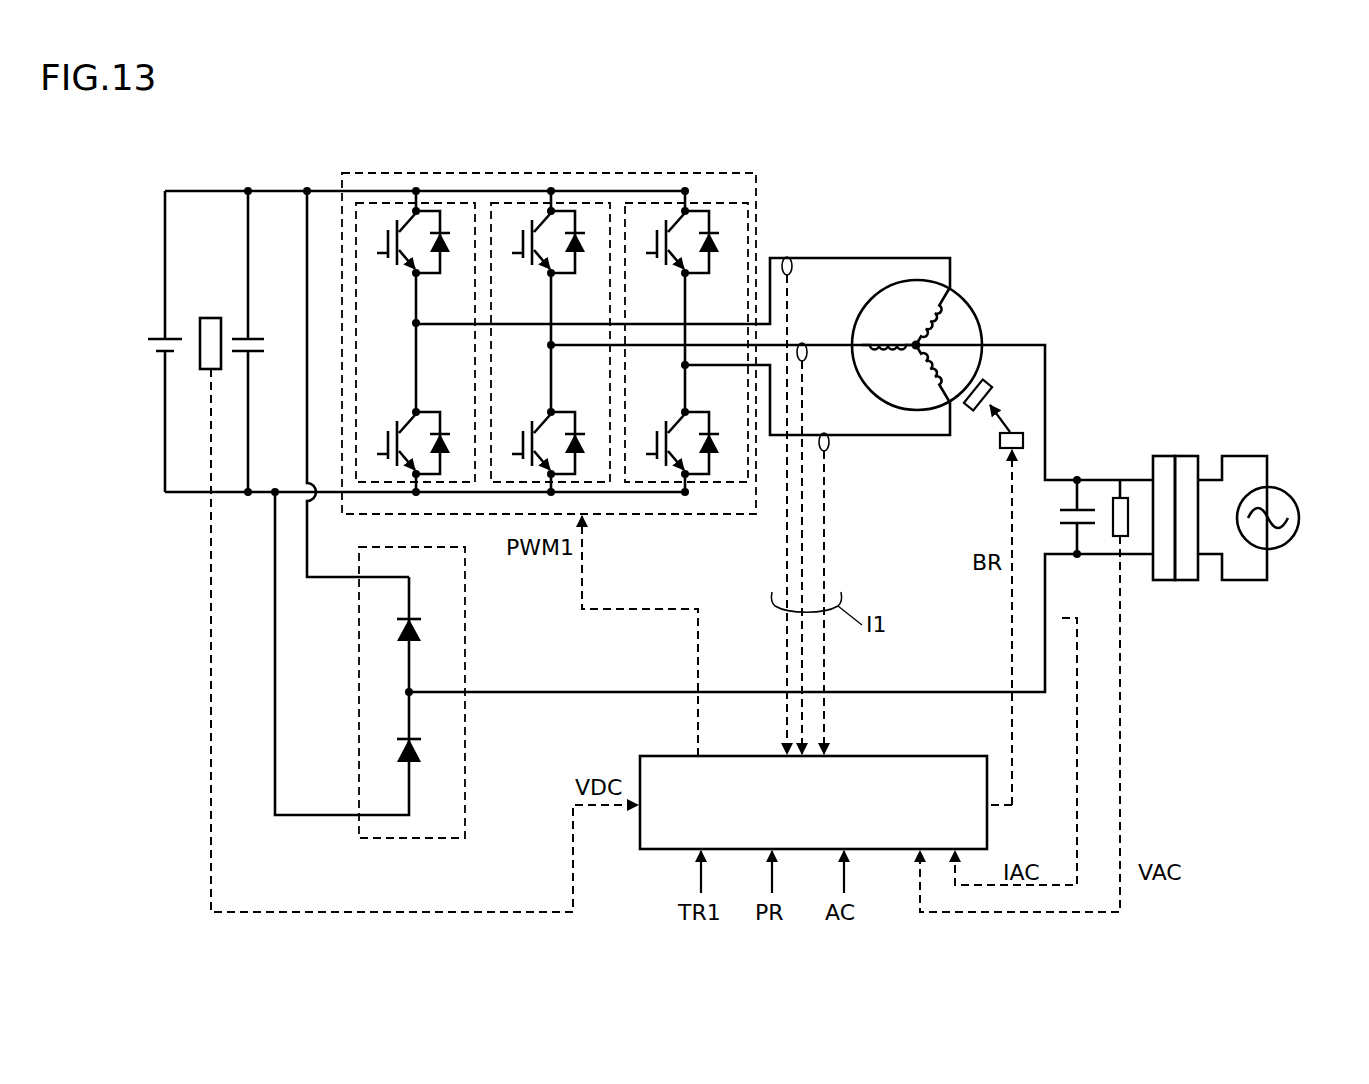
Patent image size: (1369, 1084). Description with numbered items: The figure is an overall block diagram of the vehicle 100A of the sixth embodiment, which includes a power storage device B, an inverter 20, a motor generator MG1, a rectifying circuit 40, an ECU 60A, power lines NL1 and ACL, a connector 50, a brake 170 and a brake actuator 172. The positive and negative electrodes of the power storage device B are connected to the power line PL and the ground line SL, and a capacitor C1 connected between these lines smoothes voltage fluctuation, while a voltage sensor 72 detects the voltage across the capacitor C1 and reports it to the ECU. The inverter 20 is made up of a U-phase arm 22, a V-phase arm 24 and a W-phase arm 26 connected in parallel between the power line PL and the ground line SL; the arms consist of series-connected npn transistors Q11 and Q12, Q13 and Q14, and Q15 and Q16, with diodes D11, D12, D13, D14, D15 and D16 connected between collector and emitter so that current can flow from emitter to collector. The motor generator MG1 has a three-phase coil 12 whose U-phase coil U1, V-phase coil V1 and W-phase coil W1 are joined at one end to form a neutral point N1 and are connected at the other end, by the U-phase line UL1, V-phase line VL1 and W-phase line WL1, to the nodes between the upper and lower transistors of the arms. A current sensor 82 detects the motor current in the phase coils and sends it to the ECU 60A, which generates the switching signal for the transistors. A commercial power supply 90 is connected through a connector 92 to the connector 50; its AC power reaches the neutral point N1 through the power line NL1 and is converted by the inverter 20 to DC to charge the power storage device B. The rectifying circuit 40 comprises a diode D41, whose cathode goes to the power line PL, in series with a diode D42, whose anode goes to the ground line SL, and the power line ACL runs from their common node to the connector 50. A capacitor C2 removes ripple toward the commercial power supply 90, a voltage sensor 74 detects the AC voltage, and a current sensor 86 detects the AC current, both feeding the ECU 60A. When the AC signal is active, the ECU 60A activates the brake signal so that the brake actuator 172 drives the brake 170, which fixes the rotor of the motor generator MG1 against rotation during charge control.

The vehicle 100A is at (213, 150).
The inverter 20 is at (549, 344).
The U-phase arm 22 is at (415, 313).
The V-phase arm 24 is at (550, 313).
The W-phase arm 26 is at (686, 313).
The rectifying circuit 40 is at (403, 687).
The connector 50 is at (1165, 456).
The connector 92 is at (1187, 456).
The commercial power supply 90 is at (1290, 496).
The ECU 60A is at (902, 756).
The voltage sensor 72 is at (211, 318).
The voltage sensor 74 is at (1122, 498).
The current sensor 82 is at (787, 257).
The current sensor 86 is at (1052, 625).
The three-phase coil 12 is at (930, 311).
The brake 170 is at (986, 385).
The brake actuator 172 is at (1003, 447).
The power storage device B is at (176, 339).
The capacitor C1 is at (255, 339).
The capacitor C2 is at (1087, 508).
The power line PL is at (278, 190).
The ground line SL is at (186, 492).
The power line NL1 is at (1050, 368).
The power line ACL is at (935, 692).
The U-phase line UL1 is at (940, 258).
The V-phase line VL1 is at (838, 345).
The W-phase line WL1 is at (922, 436).
The motor generator MG1 is at (942, 378).
The neutral point N1 is at (912, 352).
The U-phase coil U1 is at (945, 318).
The V-phase coil V1 is at (889, 330).
The W-phase coil W1 is at (923, 372).
The npn transistor Q11 is at (388, 263).
The npn transistor Q12 is at (388, 430).
The npn transistor Q13 is at (523, 263).
The npn transistor Q14 is at (523, 430).
The npn transistor Q15 is at (657, 263).
The npn transistor Q16 is at (657, 430).
The diode D11 is at (445, 262).
The diode D12 is at (448, 440).
The diode D13 is at (580, 262).
The diode D14 is at (583, 440).
The diode D15 is at (714, 262).
The diode D16 is at (717, 440).
The diode D41 is at (425, 635).
The diode D42 is at (425, 755).